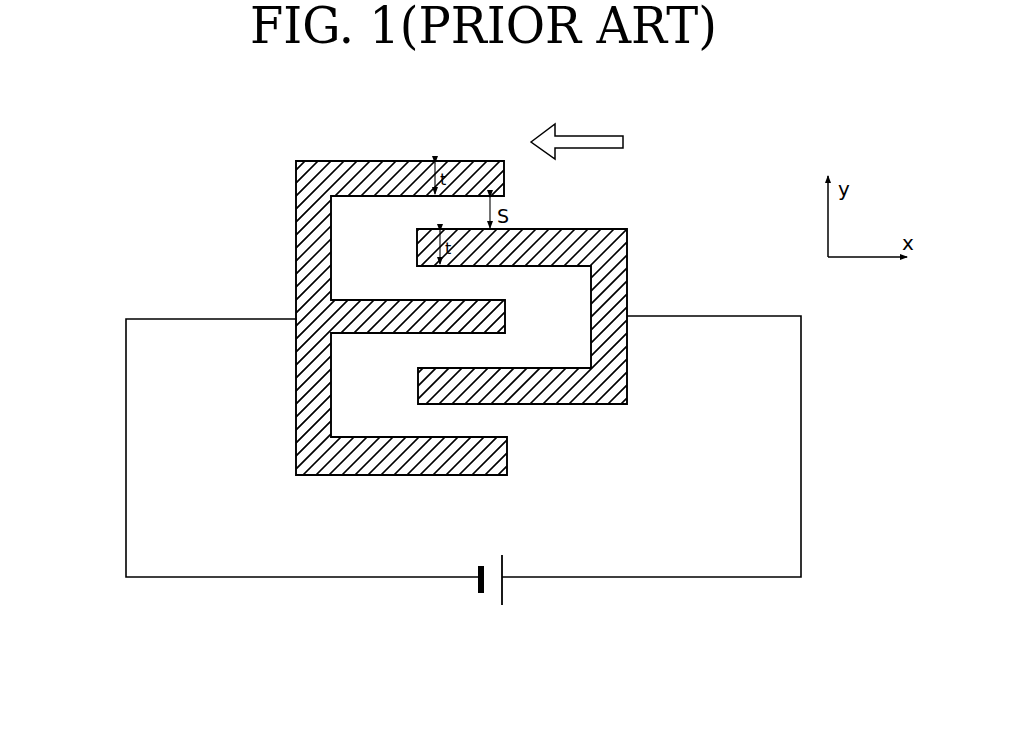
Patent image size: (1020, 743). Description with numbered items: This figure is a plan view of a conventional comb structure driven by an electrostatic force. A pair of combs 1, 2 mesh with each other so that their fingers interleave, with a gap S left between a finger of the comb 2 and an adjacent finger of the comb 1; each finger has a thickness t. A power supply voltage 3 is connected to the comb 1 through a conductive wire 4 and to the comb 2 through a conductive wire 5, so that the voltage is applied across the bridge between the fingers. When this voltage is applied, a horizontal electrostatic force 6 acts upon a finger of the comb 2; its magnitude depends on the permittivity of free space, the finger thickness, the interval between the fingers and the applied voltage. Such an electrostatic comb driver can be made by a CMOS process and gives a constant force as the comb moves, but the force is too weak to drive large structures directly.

The comb 1 is at (391, 172).
The comb 2 is at (566, 245).
The power supply voltage 3 is at (490, 602).
The conductive wire 4 is at (126, 455).
The conductive wire 5 is at (801, 461).
The horizontal electrostatic force 6 is at (623, 142).